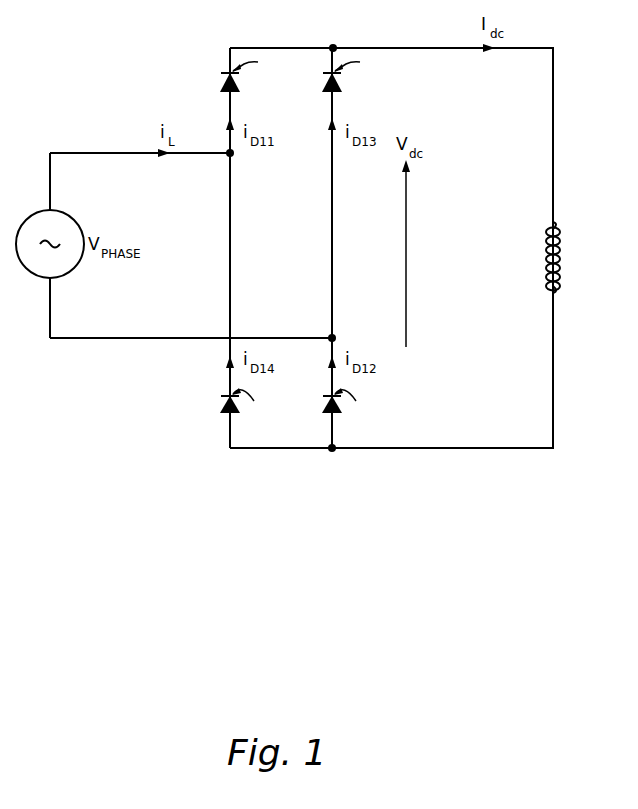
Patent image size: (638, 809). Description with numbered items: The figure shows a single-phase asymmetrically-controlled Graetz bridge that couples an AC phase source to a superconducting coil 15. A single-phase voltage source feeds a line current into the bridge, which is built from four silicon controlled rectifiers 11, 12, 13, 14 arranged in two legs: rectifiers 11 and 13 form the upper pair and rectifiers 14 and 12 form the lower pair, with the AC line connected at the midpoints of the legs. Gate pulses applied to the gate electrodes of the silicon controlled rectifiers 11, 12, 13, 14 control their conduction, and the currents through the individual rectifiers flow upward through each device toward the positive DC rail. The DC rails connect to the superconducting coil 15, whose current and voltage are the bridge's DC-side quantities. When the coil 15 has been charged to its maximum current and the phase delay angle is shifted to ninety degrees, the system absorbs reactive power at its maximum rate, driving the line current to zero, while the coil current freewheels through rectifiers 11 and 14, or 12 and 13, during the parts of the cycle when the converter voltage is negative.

The silicon controlled rectifier 11 is at (222, 78).
The silicon controlled rectifier 12 is at (323, 400).
The silicon controlled rectifier 13 is at (324, 78).
The silicon controlled rectifier 14 is at (221, 400).
The superconducting coil 15 is at (562, 256).